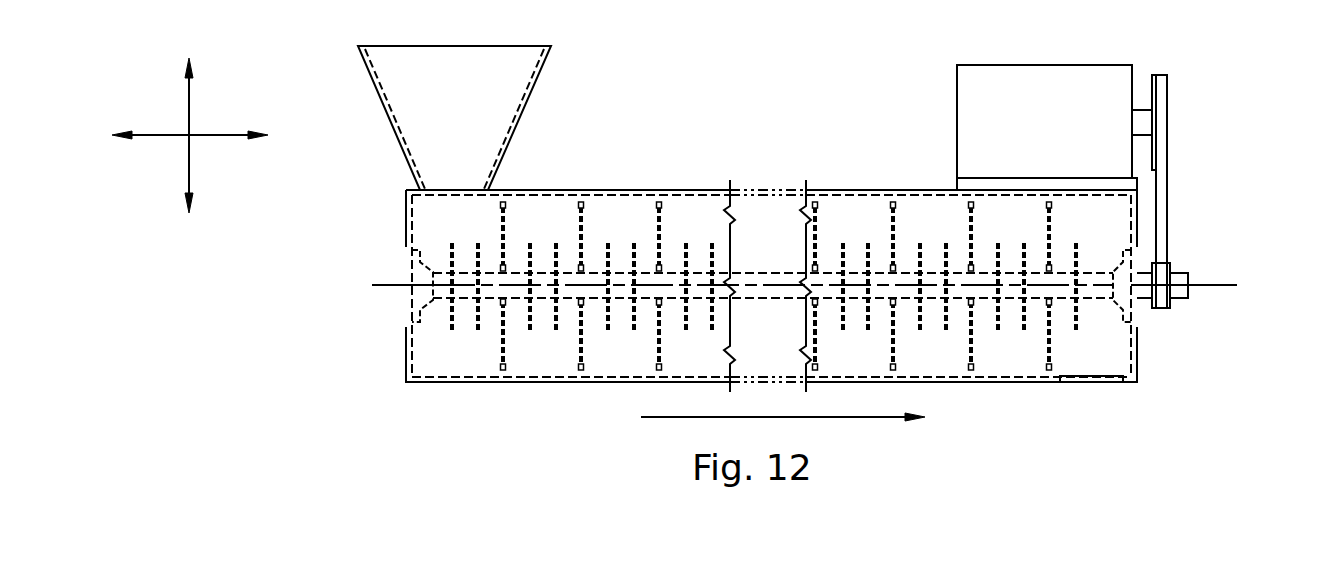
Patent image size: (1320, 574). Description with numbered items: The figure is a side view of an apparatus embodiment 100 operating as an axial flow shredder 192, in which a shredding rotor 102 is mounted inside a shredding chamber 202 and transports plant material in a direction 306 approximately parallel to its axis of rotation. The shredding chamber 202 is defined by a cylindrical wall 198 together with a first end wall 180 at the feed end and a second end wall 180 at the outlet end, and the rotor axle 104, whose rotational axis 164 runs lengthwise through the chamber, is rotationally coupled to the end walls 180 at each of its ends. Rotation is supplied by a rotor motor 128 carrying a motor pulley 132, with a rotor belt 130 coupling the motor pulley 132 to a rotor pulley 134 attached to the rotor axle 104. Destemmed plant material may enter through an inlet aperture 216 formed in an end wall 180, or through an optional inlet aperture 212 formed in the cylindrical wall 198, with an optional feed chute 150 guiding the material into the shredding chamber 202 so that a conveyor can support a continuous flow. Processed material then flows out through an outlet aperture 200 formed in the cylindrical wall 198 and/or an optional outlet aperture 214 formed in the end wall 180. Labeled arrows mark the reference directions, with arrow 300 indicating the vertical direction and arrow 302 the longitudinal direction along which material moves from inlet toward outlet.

The apparatus embodiment 100 is at (620, 45).
The shredding rotor 102 is at (855, 205).
The rotor axle 104 is at (1187, 273).
The rotor motor 128 is at (1047, 65).
The rotor belt 130 is at (1167, 183).
The motor pulley 132 is at (1167, 80).
The rotor pulley 134 is at (1166, 308).
The feed chute 150 is at (448, 46).
The rotational axis 164 is at (390, 283).
The end wall 180 is at (405, 214).
The axial flow shredder 192 is at (815, 108).
The cylindrical wall 198 is at (604, 190).
The outlet aperture 200 is at (1083, 353).
The shredding chamber 202 is at (552, 205).
The inlet aperture 212 is at (452, 205).
The outlet aperture 214 is at (1110, 353).
The inlet aperture 216 is at (392, 344).
The arrow 300 is at (189, 98).
The arrow 302 is at (205, 135).
The direction 306 is at (807, 417).